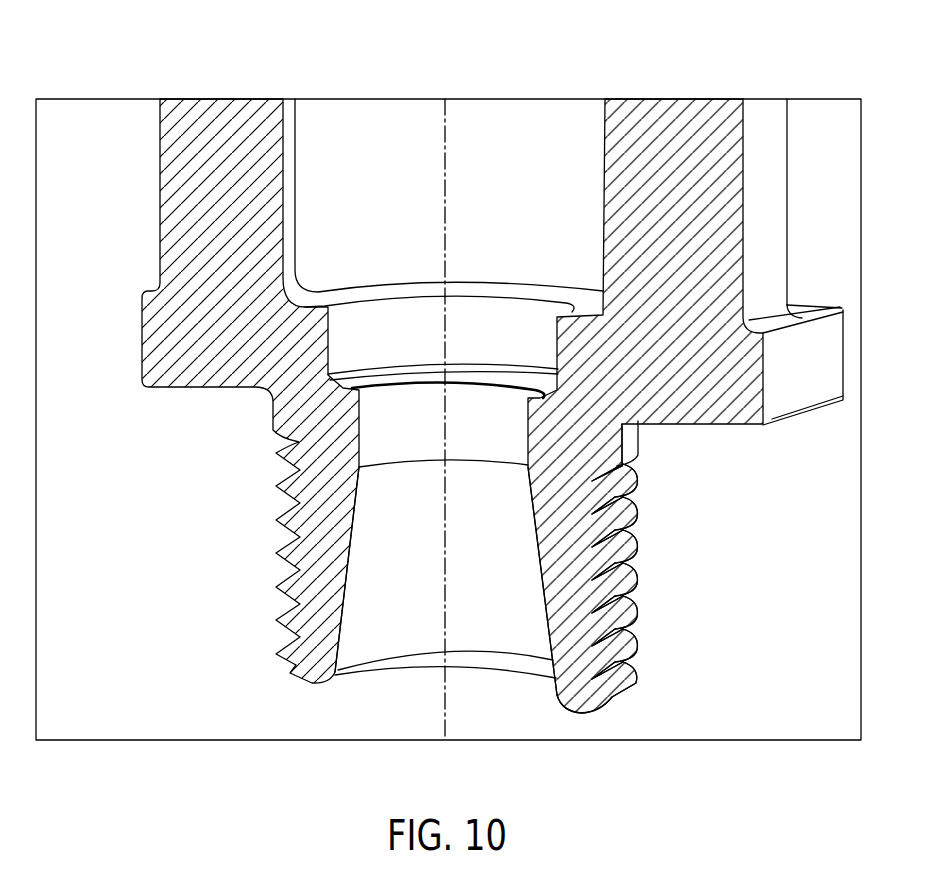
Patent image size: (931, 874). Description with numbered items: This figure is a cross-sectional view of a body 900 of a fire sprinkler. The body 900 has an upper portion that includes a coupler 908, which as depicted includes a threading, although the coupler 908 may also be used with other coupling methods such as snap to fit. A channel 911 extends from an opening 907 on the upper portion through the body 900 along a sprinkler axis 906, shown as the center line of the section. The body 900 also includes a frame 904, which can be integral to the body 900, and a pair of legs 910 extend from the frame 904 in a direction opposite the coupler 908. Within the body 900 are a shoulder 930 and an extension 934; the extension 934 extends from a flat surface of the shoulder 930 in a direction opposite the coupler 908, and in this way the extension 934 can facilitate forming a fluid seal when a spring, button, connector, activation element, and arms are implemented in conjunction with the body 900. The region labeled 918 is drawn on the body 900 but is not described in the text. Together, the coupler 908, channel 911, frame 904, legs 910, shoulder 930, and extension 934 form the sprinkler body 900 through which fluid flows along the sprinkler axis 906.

The body 900 is at (180, 57).
The frame 904 is at (140, 340).
The sprinkler axis 906 is at (447, 160).
The opening 907 is at (373, 665).
The coupler 908 is at (620, 583).
The pair of legs 910 is at (771, 178).
The channel 911 is at (397, 562).
The thread relief region 918 is at (707, 462).
The shoulder 930 is at (490, 380).
The extension 934 is at (413, 375).